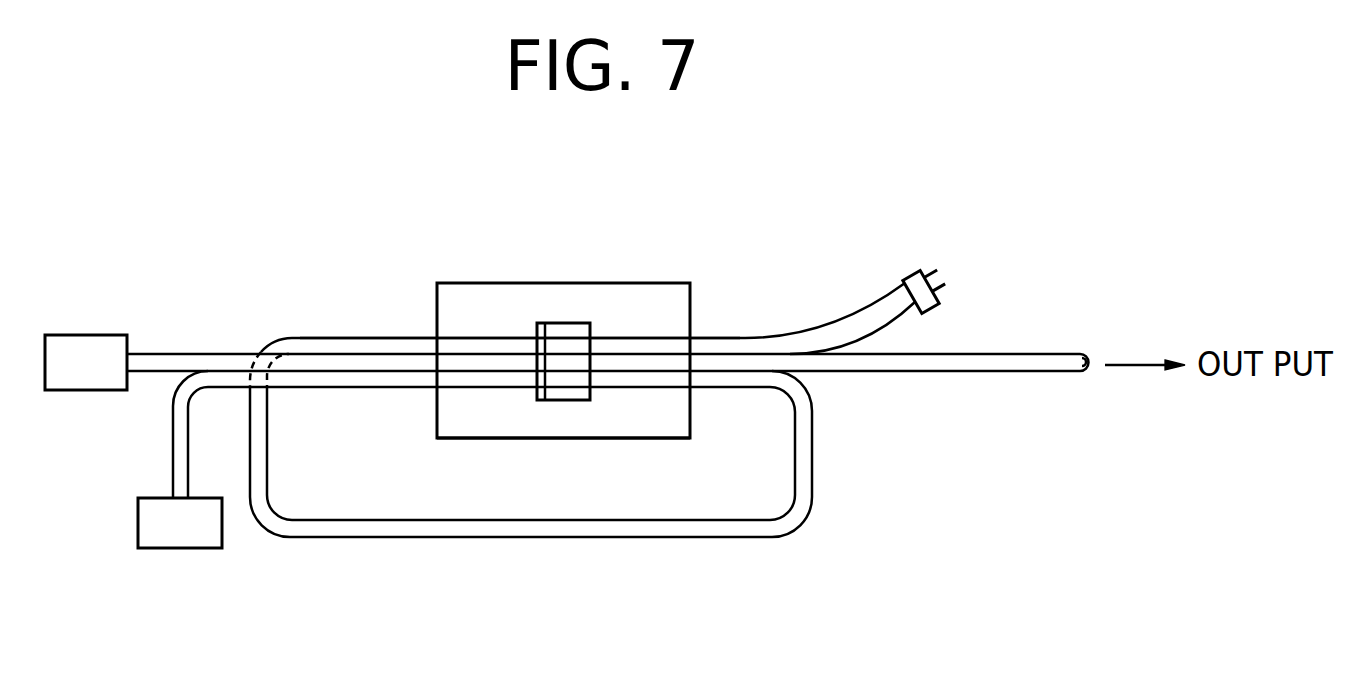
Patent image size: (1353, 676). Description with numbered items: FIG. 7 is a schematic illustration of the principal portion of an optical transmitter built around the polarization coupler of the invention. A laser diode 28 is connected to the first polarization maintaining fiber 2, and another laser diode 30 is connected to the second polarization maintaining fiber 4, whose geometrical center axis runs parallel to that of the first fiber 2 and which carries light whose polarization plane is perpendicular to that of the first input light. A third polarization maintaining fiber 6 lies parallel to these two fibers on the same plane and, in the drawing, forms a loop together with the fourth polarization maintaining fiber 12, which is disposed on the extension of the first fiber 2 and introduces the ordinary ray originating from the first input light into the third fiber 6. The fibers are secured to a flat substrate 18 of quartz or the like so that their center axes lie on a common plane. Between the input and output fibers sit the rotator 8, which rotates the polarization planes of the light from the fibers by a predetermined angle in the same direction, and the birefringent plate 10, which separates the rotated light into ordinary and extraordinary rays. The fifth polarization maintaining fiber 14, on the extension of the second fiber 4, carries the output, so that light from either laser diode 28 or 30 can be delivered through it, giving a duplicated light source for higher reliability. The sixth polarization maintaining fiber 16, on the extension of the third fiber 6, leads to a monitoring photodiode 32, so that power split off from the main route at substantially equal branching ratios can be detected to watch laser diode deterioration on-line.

The first polarization maintaining fiber 2 is at (382, 387).
The second polarization maintaining fiber 4 is at (367, 362).
The third polarization maintaining fiber 6 is at (412, 340).
The rotator 8 is at (535, 327).
The birefringent plate 10 is at (565, 328).
The fourth polarization maintaining fiber 12 is at (732, 387).
The fifth polarization maintaining fiber 14 is at (813, 362).
The sixth polarization maintaining fiber 16 is at (738, 345).
The substrate 18 is at (574, 438).
The laser diode 28 is at (184, 548).
The laser diode 30 is at (100, 334).
The monitoring photodiode 32 is at (910, 278).